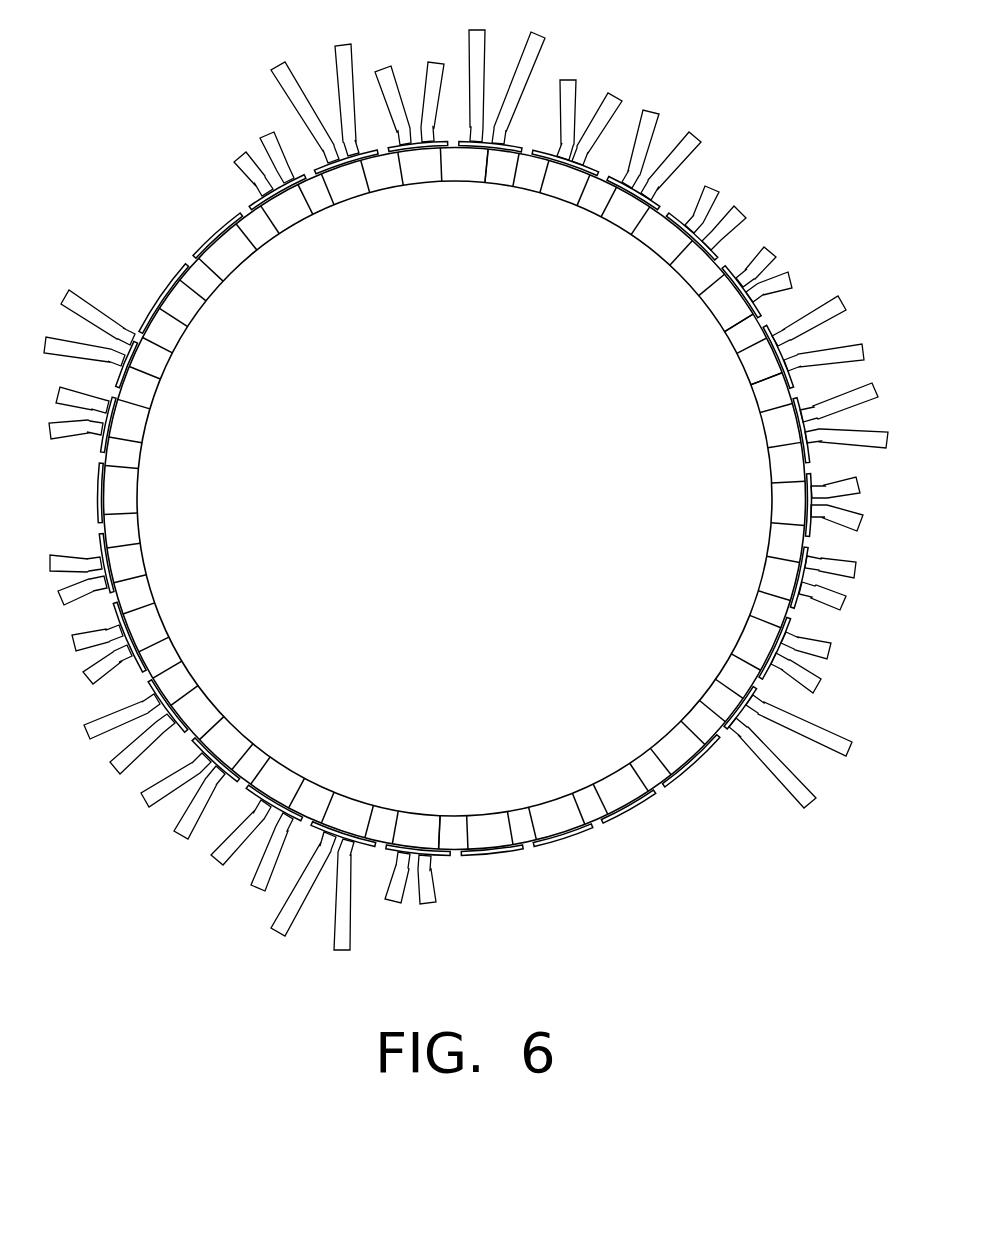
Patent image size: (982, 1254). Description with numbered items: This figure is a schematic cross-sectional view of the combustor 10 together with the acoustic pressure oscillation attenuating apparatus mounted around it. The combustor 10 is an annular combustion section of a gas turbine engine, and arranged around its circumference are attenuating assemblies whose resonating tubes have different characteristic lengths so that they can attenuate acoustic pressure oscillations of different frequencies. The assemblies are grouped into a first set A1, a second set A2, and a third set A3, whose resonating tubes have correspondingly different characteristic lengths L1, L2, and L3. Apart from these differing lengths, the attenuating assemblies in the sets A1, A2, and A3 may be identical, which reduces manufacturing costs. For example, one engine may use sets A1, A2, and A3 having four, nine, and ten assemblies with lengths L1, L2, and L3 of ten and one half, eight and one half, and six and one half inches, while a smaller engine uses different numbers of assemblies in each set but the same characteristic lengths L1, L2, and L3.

The combustor 10 is at (612, 828).
The characteristic length of first set resonating tubes L1 is at (745, 213).
The characteristic length of second set resonating tubes L2 is at (700, 140).
The characteristic length of third set resonating tubes L3 is at (550, 45).
The first set of attenuating assemblies A1 is at (662, 272).
The second set of attenuating assemblies A2 is at (608, 232).
The third set of attenuating assemblies A3 is at (477, 190).